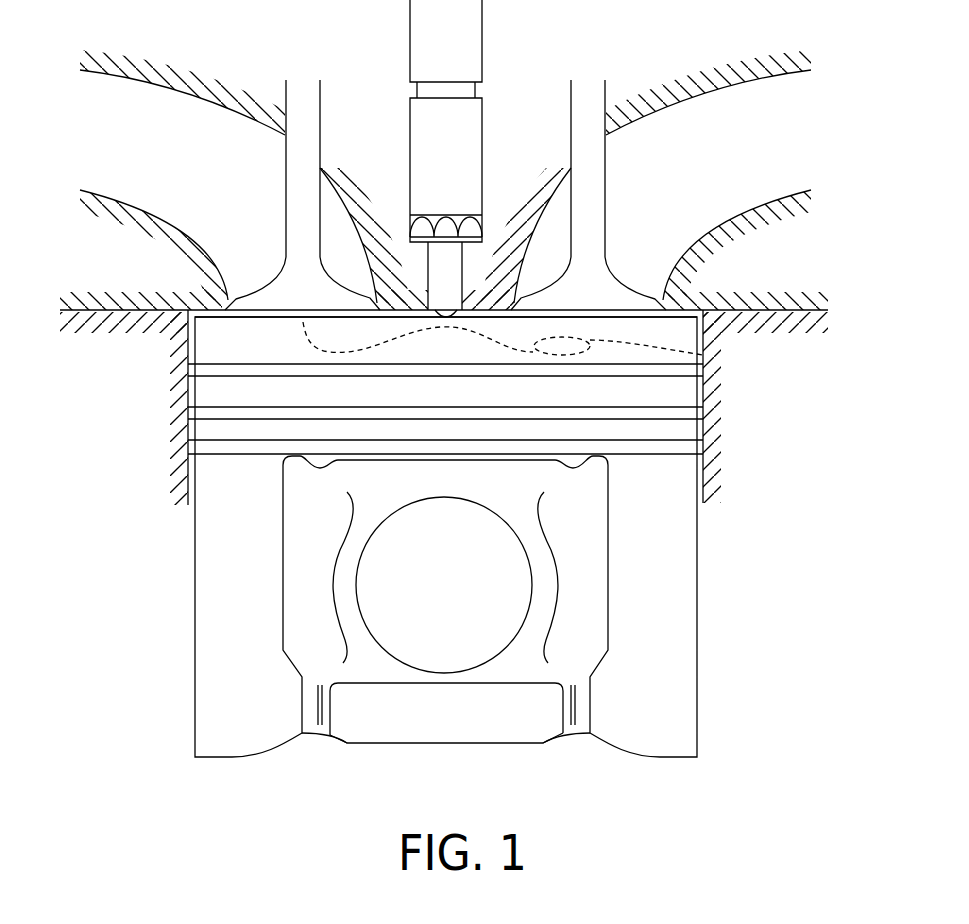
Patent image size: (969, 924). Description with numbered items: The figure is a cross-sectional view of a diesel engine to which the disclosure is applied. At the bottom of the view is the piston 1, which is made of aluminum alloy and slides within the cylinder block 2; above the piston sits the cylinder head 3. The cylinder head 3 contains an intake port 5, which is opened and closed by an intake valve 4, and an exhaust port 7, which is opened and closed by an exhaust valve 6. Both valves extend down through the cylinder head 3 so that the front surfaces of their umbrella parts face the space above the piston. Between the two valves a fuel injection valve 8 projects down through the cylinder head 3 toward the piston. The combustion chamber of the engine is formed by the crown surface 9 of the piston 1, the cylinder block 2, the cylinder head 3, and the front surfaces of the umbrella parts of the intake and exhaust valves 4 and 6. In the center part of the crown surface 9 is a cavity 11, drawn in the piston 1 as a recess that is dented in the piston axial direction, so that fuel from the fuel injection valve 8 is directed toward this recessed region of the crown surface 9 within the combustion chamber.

The piston 1 is at (697, 635).
The cylinder block 2 is at (757, 310).
The cylinder head 3 is at (133, 303).
The intake valve 4 is at (595, 197).
The intake port 5 is at (655, 230).
The exhaust valve 6 is at (298, 193).
The exhaust port 7 is at (240, 243).
The fuel injection valve 8 is at (468, 25).
The crown surface 9 is at (549, 318).
The cavity 11 is at (703, 355).